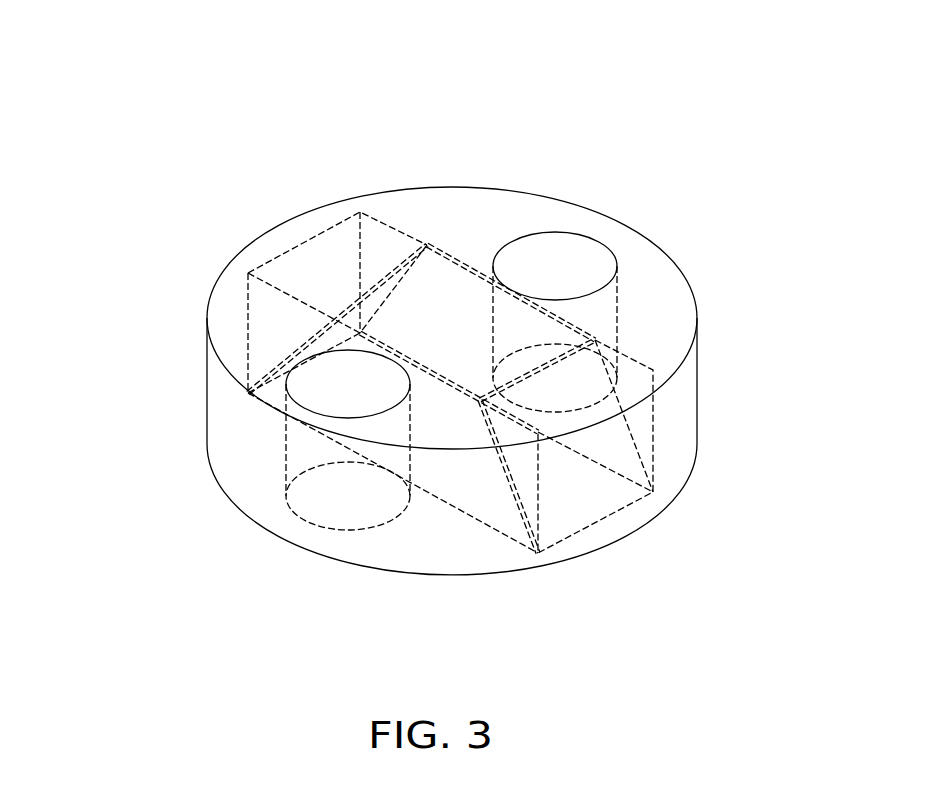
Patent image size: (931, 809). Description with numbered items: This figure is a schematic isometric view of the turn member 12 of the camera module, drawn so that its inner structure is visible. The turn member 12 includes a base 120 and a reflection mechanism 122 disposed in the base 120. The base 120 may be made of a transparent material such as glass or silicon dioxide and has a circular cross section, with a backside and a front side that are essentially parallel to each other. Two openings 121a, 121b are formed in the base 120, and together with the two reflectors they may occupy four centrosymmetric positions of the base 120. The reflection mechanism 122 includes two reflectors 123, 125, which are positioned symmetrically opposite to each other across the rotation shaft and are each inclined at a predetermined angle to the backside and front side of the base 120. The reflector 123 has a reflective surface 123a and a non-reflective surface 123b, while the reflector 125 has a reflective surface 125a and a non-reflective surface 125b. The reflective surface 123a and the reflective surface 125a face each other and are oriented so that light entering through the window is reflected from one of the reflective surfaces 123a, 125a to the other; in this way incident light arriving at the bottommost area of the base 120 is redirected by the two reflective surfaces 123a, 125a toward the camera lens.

The turn member 12 is at (466, 33).
The base 120 is at (508, 208).
The opening 121a is at (338, 395).
The opening 121b is at (572, 258).
The reflection mechanism 122 is at (302, 112).
The reflector 123 is at (317, 365).
The reflective surface 123a is at (280, 366).
The non-reflective surface 123b is at (277, 347).
The reflector 125 is at (490, 379).
The reflective surface 125a is at (507, 488).
The non-reflective surface 125b is at (582, 482).